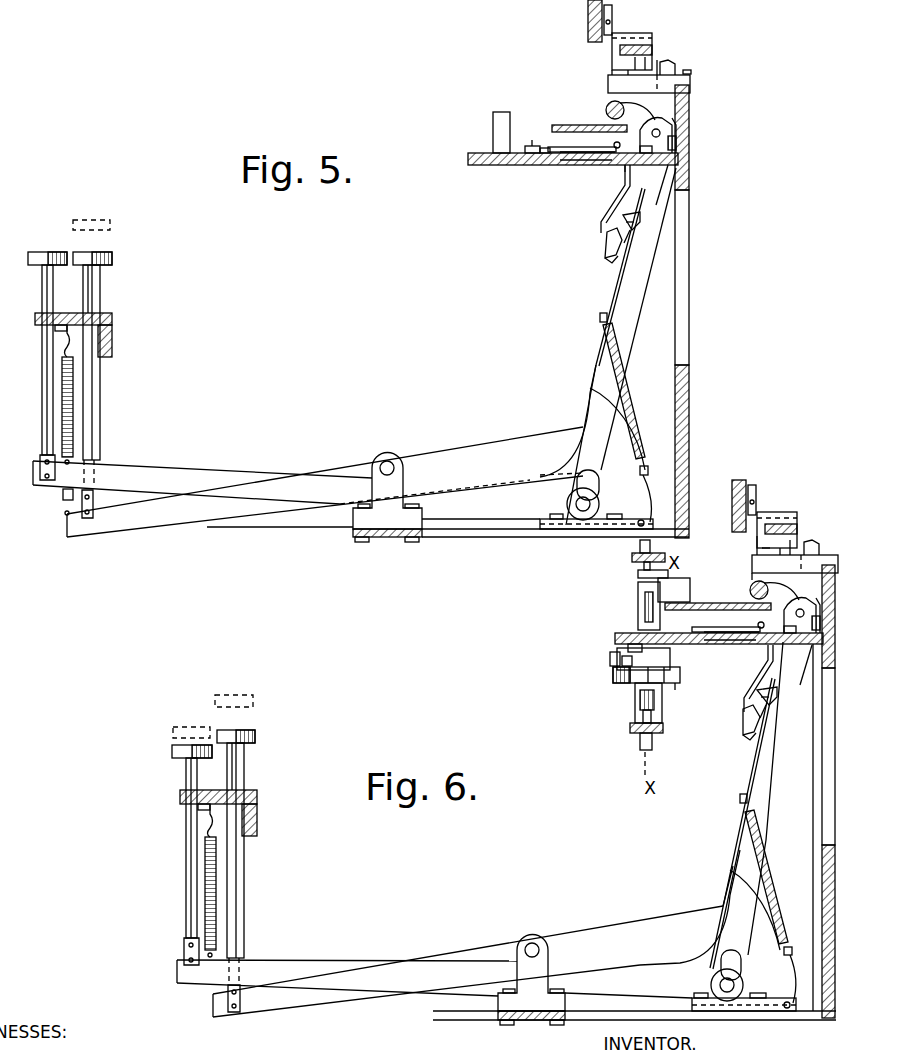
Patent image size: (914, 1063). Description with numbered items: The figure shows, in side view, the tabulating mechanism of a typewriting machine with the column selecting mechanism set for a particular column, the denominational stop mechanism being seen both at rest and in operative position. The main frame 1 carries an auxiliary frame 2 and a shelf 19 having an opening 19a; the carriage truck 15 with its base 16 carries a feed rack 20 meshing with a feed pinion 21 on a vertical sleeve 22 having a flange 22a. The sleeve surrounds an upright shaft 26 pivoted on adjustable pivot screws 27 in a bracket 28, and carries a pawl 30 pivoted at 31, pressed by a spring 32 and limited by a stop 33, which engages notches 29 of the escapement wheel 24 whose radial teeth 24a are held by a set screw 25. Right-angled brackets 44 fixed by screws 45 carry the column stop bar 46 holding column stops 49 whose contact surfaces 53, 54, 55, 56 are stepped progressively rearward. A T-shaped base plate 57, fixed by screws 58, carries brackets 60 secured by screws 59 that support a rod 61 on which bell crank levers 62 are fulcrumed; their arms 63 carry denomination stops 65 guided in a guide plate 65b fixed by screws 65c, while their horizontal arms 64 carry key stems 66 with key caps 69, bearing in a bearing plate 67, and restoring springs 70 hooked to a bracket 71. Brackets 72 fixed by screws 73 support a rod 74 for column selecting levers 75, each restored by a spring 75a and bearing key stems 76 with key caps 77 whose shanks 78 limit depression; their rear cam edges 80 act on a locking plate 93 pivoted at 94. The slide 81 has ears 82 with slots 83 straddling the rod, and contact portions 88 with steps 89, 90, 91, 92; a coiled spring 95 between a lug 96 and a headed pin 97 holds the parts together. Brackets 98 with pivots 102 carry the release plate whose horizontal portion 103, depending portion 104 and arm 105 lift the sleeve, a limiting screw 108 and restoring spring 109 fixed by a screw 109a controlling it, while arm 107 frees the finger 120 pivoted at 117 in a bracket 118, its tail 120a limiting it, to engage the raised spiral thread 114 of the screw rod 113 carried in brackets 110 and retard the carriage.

In FIG. 5, the main frame 1 is at (690, 405).
In FIG. 6, the main frame 1 is at (822, 852).
In FIG. 5, the auxiliary frame 2 is at (112, 345).
In FIG. 6, the auxiliary frame 2 is at (257, 828).
In FIG. 5, the carriage truck 15 is at (588, 16).
In FIG. 6, the carriage truck 15 is at (742, 482).
In FIG. 5, the base of the carriage truck 16 is at (556, 125).
In FIG. 6, the base of the carriage truck 16 is at (731, 603).
In FIG. 5, the shelf-like part 19 is at (474, 165).
In FIG. 6, the shelf-like part 19 is at (615, 637).
In FIG. 5, the opening in the plate 19a is at (627, 199).
In FIG. 6, the opening in the plate 19a is at (760, 678).
In FIG. 6, the feed rack 20 is at (690, 580).
In FIG. 6, the feed pinion 21 is at (638, 575).
In FIG. 6, the vertical sleeve 22 is at (638, 605).
In FIG. 6, the flange on the sleeve 22a is at (645, 596).
In FIG. 6, the escapement wheel 24 is at (620, 683).
In FIG. 6, the radial teeth 24a is at (683, 676).
In FIG. 6, the set screw 25 is at (662, 700).
In FIG. 6, the upright shaft 26 is at (643, 715).
In FIG. 6, the adjustable pivot screws 27 is at (636, 557).
In FIG. 6, the bracket 28 is at (662, 721).
In FIG. 6, the notches 29 is at (675, 672).
In FIG. 6, the pawl 30 is at (610, 660).
In FIG. 6, the pivot 31 is at (618, 656).
In FIG. 6, the spring 32 is at (635, 644).
In FIG. 6, the stop 33 is at (622, 664).
In FIG. 5, the right-angled brackets 44 is at (612, 10).
In FIG. 6, the right-angled brackets 44 is at (753, 486).
In FIG. 5, the screws 45 is at (612, 22).
In FIG. 6, the screws 45 is at (756, 500).
In FIG. 5, the column stop bar 46 is at (652, 46).
In FIG. 6, the column stop bar 46 is at (797, 528).
In FIG. 5, the column stop 49 is at (612, 50).
In FIG. 6, the column stop 49 is at (780, 512).
In FIG. 5, the contact surface 53 is at (624, 64).
In FIG. 6, the contact surface 53 is at (759, 539).
In FIG. 5, the contact surface 54 is at (627, 71).
In FIG. 6, the contact surface 54 is at (795, 562).
In FIG. 5, the contact surface 55 is at (642, 44).
In FIG. 6, the contact surface 55 is at (796, 560).
In FIG. 5, the contact surface 56 is at (646, 77).
In FIG. 6, the contact surface 56 is at (797, 546).
In FIG. 6, the T-shaped base plate 57 is at (617, 1021).
In FIG. 5, the screws 58 is at (678, 538).
In FIG. 6, the screws 58 is at (510, 1025).
In FIG. 5, the screws 59 is at (553, 513).
In FIG. 6, the screws 59 is at (695, 996).
In FIG. 5, the brackets 60 is at (600, 530).
In FIG. 6, the brackets 60 is at (767, 995).
In FIG. 5, the rod 61 is at (566, 525).
In FIG. 6, the rod 61 is at (720, 985).
In FIG. 5, the bell crank levers 62 is at (556, 475).
In FIG. 6, the bell crank levers 62 is at (700, 961).
In FIG. 5, the arms 63 is at (644, 298).
In FIG. 6, the arms 63 is at (776, 743).
In FIG. 5, the horizontally-disposed arms 64 is at (270, 471).
In FIG. 6, the horizontally-disposed arms 64 is at (370, 960).
In FIG. 5, the denomination stop 65 is at (668, 62).
In FIG. 6, the denomination stop 65 is at (819, 548).
In FIG. 6, the guide plate 65b is at (763, 556).
In FIG. 5, the screws 65c is at (692, 73).
In FIG. 5, the key stem 66 is at (42, 388).
In FIG. 6, the key stem 66 is at (191, 861).
In FIG. 5, the bearing plate 67 is at (112, 316).
In FIG. 6, the bearing plate 67 is at (257, 797).
In FIG. 5, the key cap 69 is at (40, 252).
In FIG. 6, the key cap 69 is at (182, 745).
In FIG. 5, the restoring spring 70 is at (73, 386).
In FIG. 6, the restoring spring 70 is at (205, 866).
In FIG. 5, the bracket 71 is at (76, 312).
In FIG. 6, the bracket 71 is at (205, 820).
In FIG. 5, the brackets 72 is at (355, 514).
In FIG. 6, the brackets 72 is at (549, 948).
In FIG. 5, the screws 73 is at (362, 504).
In FIG. 6, the screws 73 is at (510, 989).
In FIG. 5, the rod 74 is at (388, 460).
In FIG. 6, the rod 74 is at (532, 943).
In FIG. 5, the column selecting levers 75 is at (488, 442).
In FIG. 6, the column selecting levers 75 is at (641, 921).
In FIG. 5, the restoring spring 75a is at (63, 495).
In FIG. 5, the key stems 76 is at (98, 428).
In FIG. 6, the key stems 76 is at (243, 890).
In FIG. 5, the key caps 77 is at (112, 258).
In FIG. 6, the key caps 77 is at (233, 735).
In FIG. 5, the shanks 78 is at (100, 292).
In FIG. 6, the shanks 78 is at (244, 771).
In FIG. 5, the cam edges 80 is at (633, 438).
In FIG. 6, the cam edges 80 is at (765, 919).
In FIG. 5, the column selecting slide 81 is at (614, 293).
In FIG. 6, the column selecting slide 81 is at (752, 773).
In FIG. 6, the ears 82 is at (724, 926).
In FIG. 5, the slots 83 is at (600, 482).
In FIG. 6, the slots 83 is at (732, 950).
In FIG. 5, the contact portions 88 is at (613, 260).
In FIG. 6, the contact portions 88 is at (750, 740).
In FIG. 5, the contact face 89 is at (634, 217).
In FIG. 6, the contact face 89 is at (775, 691).
In FIG. 5, the contact faces 90 is at (628, 228).
In FIG. 6, the contact faces 90 is at (771, 702).
In FIG. 5, the contact face 91 is at (626, 244).
In FIG. 6, the contact face 91 is at (762, 720).
In FIG. 5, the contact face 92 is at (606, 241).
In FIG. 6, the contact face 92 is at (744, 720).
In FIG. 5, the locking plate 93 is at (650, 494).
In FIG. 6, the locking plate 93 is at (793, 973).
In FIG. 5, the pivot 94 is at (647, 521).
In FIG. 6, the pivot 94 is at (791, 1005).
In FIG. 5, the coiled spring 95 is at (616, 356).
In FIG. 6, the coiled spring 95 is at (755, 822).
In FIG. 5, the lug 96 is at (600, 318).
In FIG. 6, the lug 96 is at (740, 798).
In FIG. 5, the headed pin 97 is at (648, 470).
In FIG. 6, the headed pin 97 is at (791, 947).
In FIG. 5, the brackets 98 is at (614, 142).
In FIG. 6, the brackets 98 is at (760, 623).
In FIG. 5, the pivots 102 is at (614, 166).
In FIG. 6, the pivots 102 is at (762, 622).
In FIG. 5, the horizontally disposed portion 103 is at (587, 140).
In FIG. 6, the horizontally disposed portion 103 is at (731, 617).
In FIG. 5, the downwardly and forwardly extending portion 104 is at (623, 185).
In FIG. 5, the arm 105 is at (493, 135).
In FIG. 5, the arm 107 is at (653, 152).
In FIG. 6, the arm 107 is at (720, 637).
In FIG. 5, the limiting screw 108 is at (531, 140).
In FIG. 5, the restoring spring 109 is at (581, 140).
In FIG. 6, the restoring spring 109 is at (706, 627).
In FIG. 5, the screw 109a is at (546, 165).
In FIG. 5, the brackets 110 is at (650, 125).
In FIG. 6, the brackets 110 is at (790, 608).
In FIG. 5, the screw rod 113 is at (606, 108).
In FIG. 6, the screw rod 113 is at (767, 586).
In FIG. 5, the raised spiral thread 114 is at (649, 85).
In FIG. 6, the raised spiral thread 114 is at (752, 583).
In FIG. 5, the pivot 117 is at (661, 133).
In FIG. 6, the pivot 117 is at (803, 618).
In FIG. 5, the bracket 118 is at (662, 186).
In FIG. 6, the bracket 118 is at (807, 675).
In FIG. 5, the finger-like member 120 is at (674, 121).
In FIG. 6, the finger-like member 120 is at (793, 592).
In FIG. 5, the tail 120a is at (676, 143).
In FIG. 6, the tail 120a is at (781, 640).